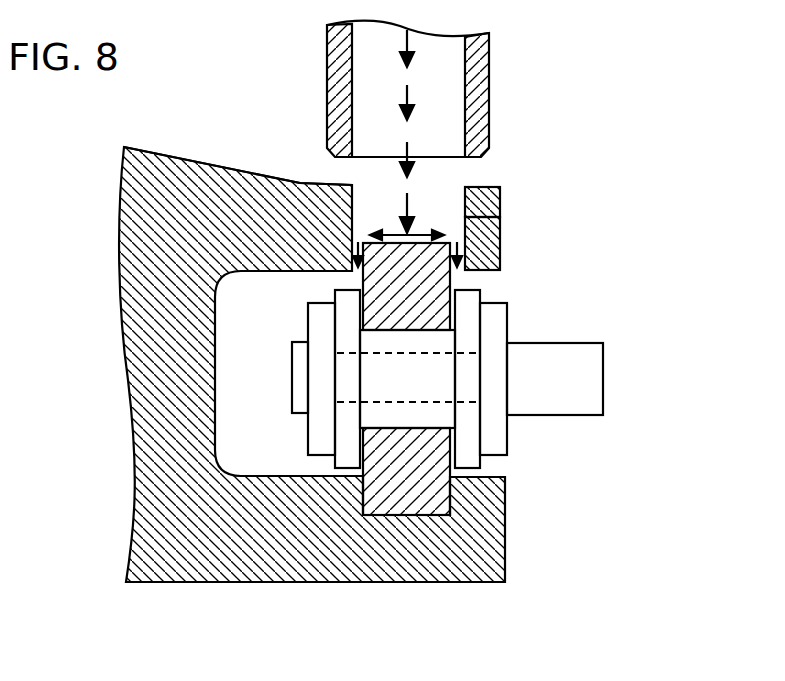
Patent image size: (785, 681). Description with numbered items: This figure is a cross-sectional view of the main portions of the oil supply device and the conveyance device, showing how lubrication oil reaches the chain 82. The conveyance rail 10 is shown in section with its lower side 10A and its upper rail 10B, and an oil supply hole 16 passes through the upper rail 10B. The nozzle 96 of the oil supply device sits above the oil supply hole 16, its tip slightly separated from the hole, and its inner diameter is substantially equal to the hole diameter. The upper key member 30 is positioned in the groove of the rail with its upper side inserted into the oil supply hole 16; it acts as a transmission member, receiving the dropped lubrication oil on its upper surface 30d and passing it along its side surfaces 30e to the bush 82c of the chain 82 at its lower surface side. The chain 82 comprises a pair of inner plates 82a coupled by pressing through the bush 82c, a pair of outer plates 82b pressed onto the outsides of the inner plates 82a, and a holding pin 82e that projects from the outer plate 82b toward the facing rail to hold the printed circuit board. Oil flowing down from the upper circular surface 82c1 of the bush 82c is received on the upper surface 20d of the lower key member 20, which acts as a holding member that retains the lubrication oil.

The conveyance rail 10 is at (126, 373).
The bottom surface of base 10A is at (298, 582).
The upper rail 10B is at (200, 162).
The oil supply hole 16 is at (459, 187).
The lower key member 20 is at (450, 492).
The upper surface of lower key member 20d is at (395, 428).
The upper key member 30 is at (533, 272).
The upper surface of upper key member 30d is at (446, 247).
The side surfaces of upper key member 30e is at (452, 281).
The chain 82 is at (472, 297).
The inner plate 82a is at (477, 297).
The outer plate 82b is at (507, 325).
The bush 82c is at (448, 418).
The upper circular surface of bush 82c1 is at (393, 327).
The holding pin 82e is at (603, 383).
The nozzle 96 is at (489, 90).